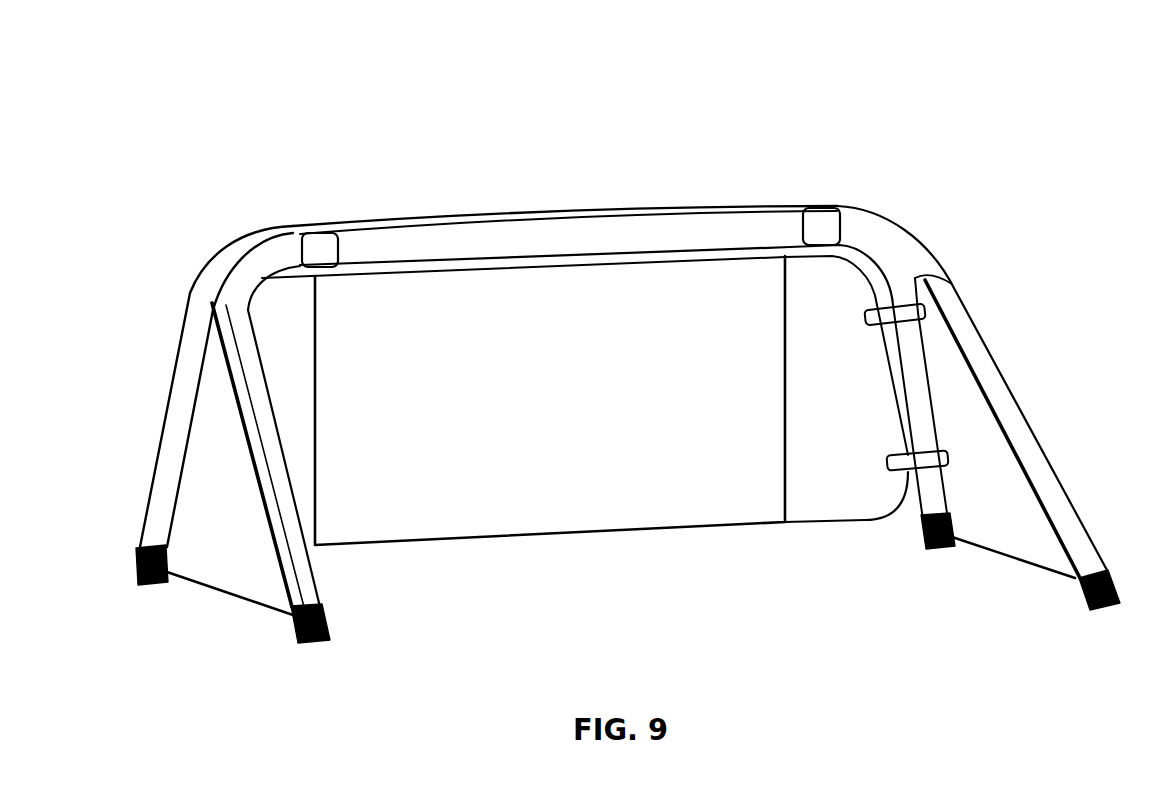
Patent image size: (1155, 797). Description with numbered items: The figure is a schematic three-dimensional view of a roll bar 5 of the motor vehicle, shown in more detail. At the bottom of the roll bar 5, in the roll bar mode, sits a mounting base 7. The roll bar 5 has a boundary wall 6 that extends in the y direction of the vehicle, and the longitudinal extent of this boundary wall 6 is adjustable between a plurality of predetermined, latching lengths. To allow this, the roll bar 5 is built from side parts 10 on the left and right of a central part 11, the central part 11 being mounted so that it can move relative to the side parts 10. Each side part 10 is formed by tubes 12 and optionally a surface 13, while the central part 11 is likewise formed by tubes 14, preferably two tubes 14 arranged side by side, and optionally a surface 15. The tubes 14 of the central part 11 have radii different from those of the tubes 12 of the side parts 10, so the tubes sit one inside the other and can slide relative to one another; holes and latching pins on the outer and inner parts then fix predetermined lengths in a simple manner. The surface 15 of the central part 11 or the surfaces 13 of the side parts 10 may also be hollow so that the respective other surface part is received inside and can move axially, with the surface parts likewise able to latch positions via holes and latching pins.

The roll bar 5 is at (256, 100).
The boundary wall 6 is at (687, 300).
The mounting base 7 is at (135, 563).
The side parts 10 is at (260, 443).
The central part 11 is at (577, 210).
The tubes 12 is at (242, 360).
The surface 13 is at (266, 310).
The tubes 14 is at (410, 238).
The surface 15 is at (495, 310).